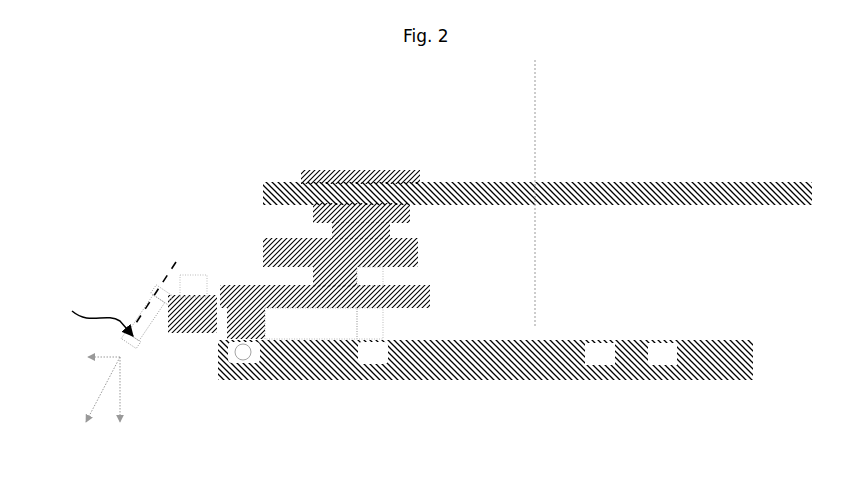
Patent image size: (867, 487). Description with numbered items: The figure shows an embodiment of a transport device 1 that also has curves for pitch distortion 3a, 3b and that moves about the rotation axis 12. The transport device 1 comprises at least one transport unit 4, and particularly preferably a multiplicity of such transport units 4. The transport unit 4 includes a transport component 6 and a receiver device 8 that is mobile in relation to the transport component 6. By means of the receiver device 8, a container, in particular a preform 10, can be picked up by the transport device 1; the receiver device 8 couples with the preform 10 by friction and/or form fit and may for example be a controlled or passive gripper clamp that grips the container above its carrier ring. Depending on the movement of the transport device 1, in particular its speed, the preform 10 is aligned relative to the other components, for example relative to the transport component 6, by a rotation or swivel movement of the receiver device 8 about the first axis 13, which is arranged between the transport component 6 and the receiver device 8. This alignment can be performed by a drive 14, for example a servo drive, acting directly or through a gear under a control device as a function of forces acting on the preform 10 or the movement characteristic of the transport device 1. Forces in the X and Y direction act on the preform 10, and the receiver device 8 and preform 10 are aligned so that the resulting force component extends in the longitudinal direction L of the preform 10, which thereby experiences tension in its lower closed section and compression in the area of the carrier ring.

The transport device 1 is at (144, 111).
The curve for pitch distortion 3a is at (250, 357).
The curve for pitch distortion 3b is at (368, 357).
The transport unit 4 is at (152, 262).
The transport component 6 is at (215, 298).
The receiver device 8 is at (132, 304).
The preform 10 is at (128, 343).
The rotation axis 12 is at (535, 108).
The first axis 13 is at (167, 327).
The drive 14 is at (198, 282).